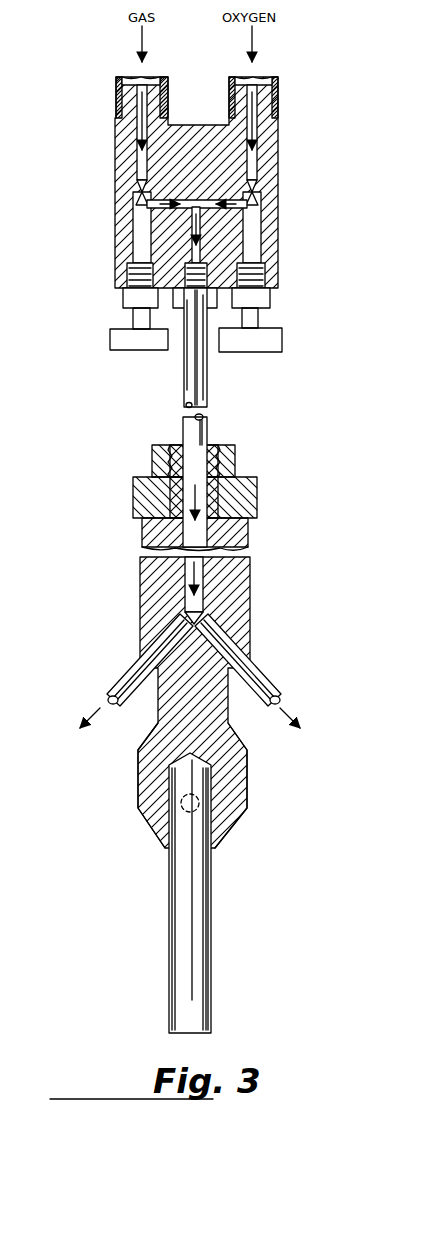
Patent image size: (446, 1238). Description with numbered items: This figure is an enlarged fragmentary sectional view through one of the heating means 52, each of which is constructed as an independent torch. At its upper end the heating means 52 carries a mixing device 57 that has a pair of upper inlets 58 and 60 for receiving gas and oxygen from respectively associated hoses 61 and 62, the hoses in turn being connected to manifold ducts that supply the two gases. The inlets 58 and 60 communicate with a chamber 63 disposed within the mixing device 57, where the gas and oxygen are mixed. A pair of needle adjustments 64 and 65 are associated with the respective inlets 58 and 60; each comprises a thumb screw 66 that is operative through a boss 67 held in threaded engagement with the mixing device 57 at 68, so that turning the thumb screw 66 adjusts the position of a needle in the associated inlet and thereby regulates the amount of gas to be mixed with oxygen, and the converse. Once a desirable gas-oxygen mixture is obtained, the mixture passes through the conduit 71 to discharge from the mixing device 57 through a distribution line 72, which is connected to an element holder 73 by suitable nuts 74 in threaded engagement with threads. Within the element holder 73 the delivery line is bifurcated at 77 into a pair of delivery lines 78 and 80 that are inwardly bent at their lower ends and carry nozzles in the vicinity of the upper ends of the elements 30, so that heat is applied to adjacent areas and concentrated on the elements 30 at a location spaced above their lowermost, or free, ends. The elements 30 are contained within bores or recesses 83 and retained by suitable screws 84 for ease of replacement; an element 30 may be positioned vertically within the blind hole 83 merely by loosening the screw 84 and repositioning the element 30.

The element 30 is at (190, 943).
The heating means 52 is at (133, 593).
The mixing device 57 is at (112, 164).
The upper inlet 58 is at (148, 100).
The upper inlet 60 is at (258, 100).
The hose 61 is at (117, 88).
The hose 62 is at (276, 112).
The chamber 63 is at (190, 214).
The needle adjustment 64 is at (130, 297).
The needle adjustment 65 is at (260, 302).
The thumb screw 66 is at (275, 340).
The boss 67 is at (267, 282).
The threaded engagement 68 is at (260, 268).
The conduit 71 is at (197, 210).
The distribution line 72 is at (193, 383).
The element holder 73 is at (247, 527).
The nut 74 is at (237, 463).
The bifurcation 77 is at (207, 585).
The delivery line 78 is at (130, 672).
The delivery line 80 is at (258, 677).
The bore 83 is at (212, 750).
The screw 84 is at (199, 803).